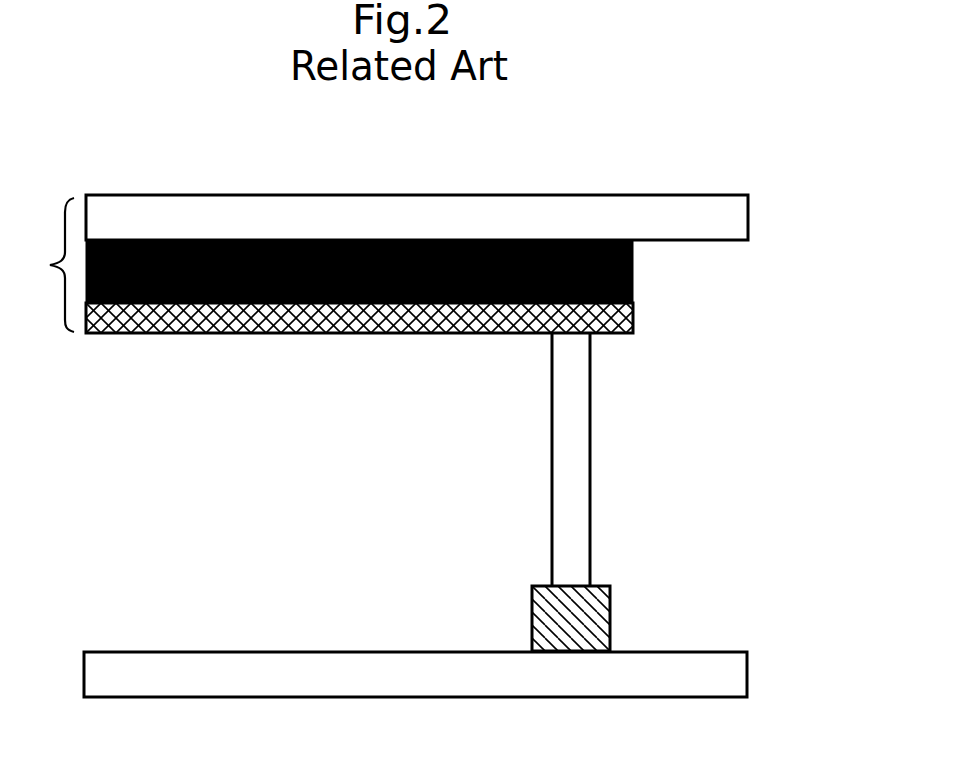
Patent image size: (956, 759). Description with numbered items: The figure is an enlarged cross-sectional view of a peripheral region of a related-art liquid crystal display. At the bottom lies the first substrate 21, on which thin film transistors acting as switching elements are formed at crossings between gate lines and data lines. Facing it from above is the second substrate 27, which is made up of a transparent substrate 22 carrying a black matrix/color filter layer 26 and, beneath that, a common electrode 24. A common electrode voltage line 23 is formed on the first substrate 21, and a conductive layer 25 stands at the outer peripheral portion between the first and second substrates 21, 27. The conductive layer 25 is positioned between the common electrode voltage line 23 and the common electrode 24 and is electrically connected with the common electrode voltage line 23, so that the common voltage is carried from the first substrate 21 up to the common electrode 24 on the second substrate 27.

The first substrate 21 is at (747, 673).
The transparent substrate 22 is at (748, 218).
The common electrode voltage line 23 is at (610, 618).
The common electrode 24 is at (633, 318).
The conductive layer 25 is at (590, 468).
The black matrix/color filter layer 26 is at (633, 270).
The second substrate 27 is at (44, 265).